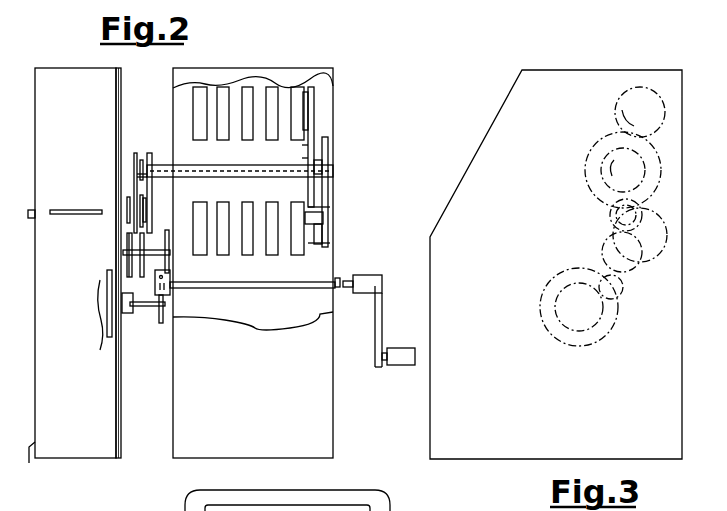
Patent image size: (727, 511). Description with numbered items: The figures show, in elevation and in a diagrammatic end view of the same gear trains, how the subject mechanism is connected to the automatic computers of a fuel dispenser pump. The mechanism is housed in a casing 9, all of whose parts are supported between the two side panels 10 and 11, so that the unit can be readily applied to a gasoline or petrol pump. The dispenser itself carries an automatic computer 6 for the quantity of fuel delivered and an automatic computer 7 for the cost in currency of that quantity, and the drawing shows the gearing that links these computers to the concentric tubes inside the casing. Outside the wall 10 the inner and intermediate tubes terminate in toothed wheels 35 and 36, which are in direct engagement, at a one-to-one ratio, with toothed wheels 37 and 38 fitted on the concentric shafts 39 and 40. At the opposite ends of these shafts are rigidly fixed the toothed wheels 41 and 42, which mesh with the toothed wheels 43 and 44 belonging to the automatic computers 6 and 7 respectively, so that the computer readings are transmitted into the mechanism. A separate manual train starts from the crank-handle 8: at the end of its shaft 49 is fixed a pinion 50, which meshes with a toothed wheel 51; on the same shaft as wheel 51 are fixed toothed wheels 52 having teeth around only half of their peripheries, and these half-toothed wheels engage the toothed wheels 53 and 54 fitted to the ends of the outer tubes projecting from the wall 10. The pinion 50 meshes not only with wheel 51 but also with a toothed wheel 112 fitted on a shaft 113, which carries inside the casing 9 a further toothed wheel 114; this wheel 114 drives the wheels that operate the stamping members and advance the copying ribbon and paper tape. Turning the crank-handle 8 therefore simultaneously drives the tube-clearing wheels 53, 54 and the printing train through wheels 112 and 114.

In FIG. 2, the automatic computer 6 is at (237, 262).
In FIG. 2, the automatic computer 7 is at (235, 95).
In FIG. 2, the crank-handle 8 is at (376, 330).
In FIG. 2, the casing 9 is at (105, 445).
In FIG. 2, the side panel 10 is at (120, 400).
In FIG. 3, the side panel 10 is at (440, 412).
In FIG. 2, the side panel 11 is at (370, 483).
In FIG. 2, the toothed wheel 35 is at (144, 202).
In FIG. 3, the toothed wheel 35 is at (566, 211).
In FIG. 2, the toothed wheel 36 is at (130, 225).
In FIG. 3, the toothed wheel 36 is at (604, 211).
In FIG. 2, the toothed wheel 37 is at (150, 152).
In FIG. 3, the toothed wheel 37 is at (571, 170).
In FIG. 2, the toothed wheel 38 is at (135, 152).
In FIG. 3, the toothed wheel 38 is at (602, 174).
In FIG. 2, the shaft 39 is at (196, 166).
In FIG. 2, the shaft 40 is at (142, 158).
In FIG. 2, the toothed wheel 41 is at (308, 153).
In FIG. 3, the toothed wheel 41 is at (586, 162).
In FIG. 2, the toothed wheel 42 is at (329, 158).
In FIG. 3, the toothed wheel 42 is at (596, 142).
In FIG. 2, the toothed wheel 43 is at (315, 107).
In FIG. 3, the toothed wheel 43 is at (626, 92).
In FIG. 2, the toothed wheel 44 is at (330, 220).
In FIG. 3, the toothed wheel 44 is at (650, 240).
In FIG. 2, the shaft 49 is at (318, 284).
In FIG. 2, the pinion 50 is at (172, 285).
In FIG. 3, the pinion 50 is at (620, 292).
In FIG. 2, the toothed wheel 51 is at (168, 231).
In FIG. 3, the toothed wheel 51 is at (577, 252).
In FIG. 2, the toothed wheels 52 is at (142, 278).
In FIG. 3, the toothed wheels 52 is at (602, 250).
In FIG. 2, the toothed wheel 53 is at (146, 218).
In FIG. 3, the toothed wheel 53 is at (578, 218).
In FIG. 2, the toothed wheel 54 is at (127, 215).
In FIG. 3, the toothed wheel 54 is at (616, 222).
In FIG. 2, the toothed wheel 112 is at (160, 325).
In FIG. 3, the toothed wheel 112 is at (568, 330).
In FIG. 2, the shaft 113 is at (165, 312).
In FIG. 2, the toothed wheel 114 is at (108, 322).
In FIG. 3, the toothed wheel 114 is at (542, 320).